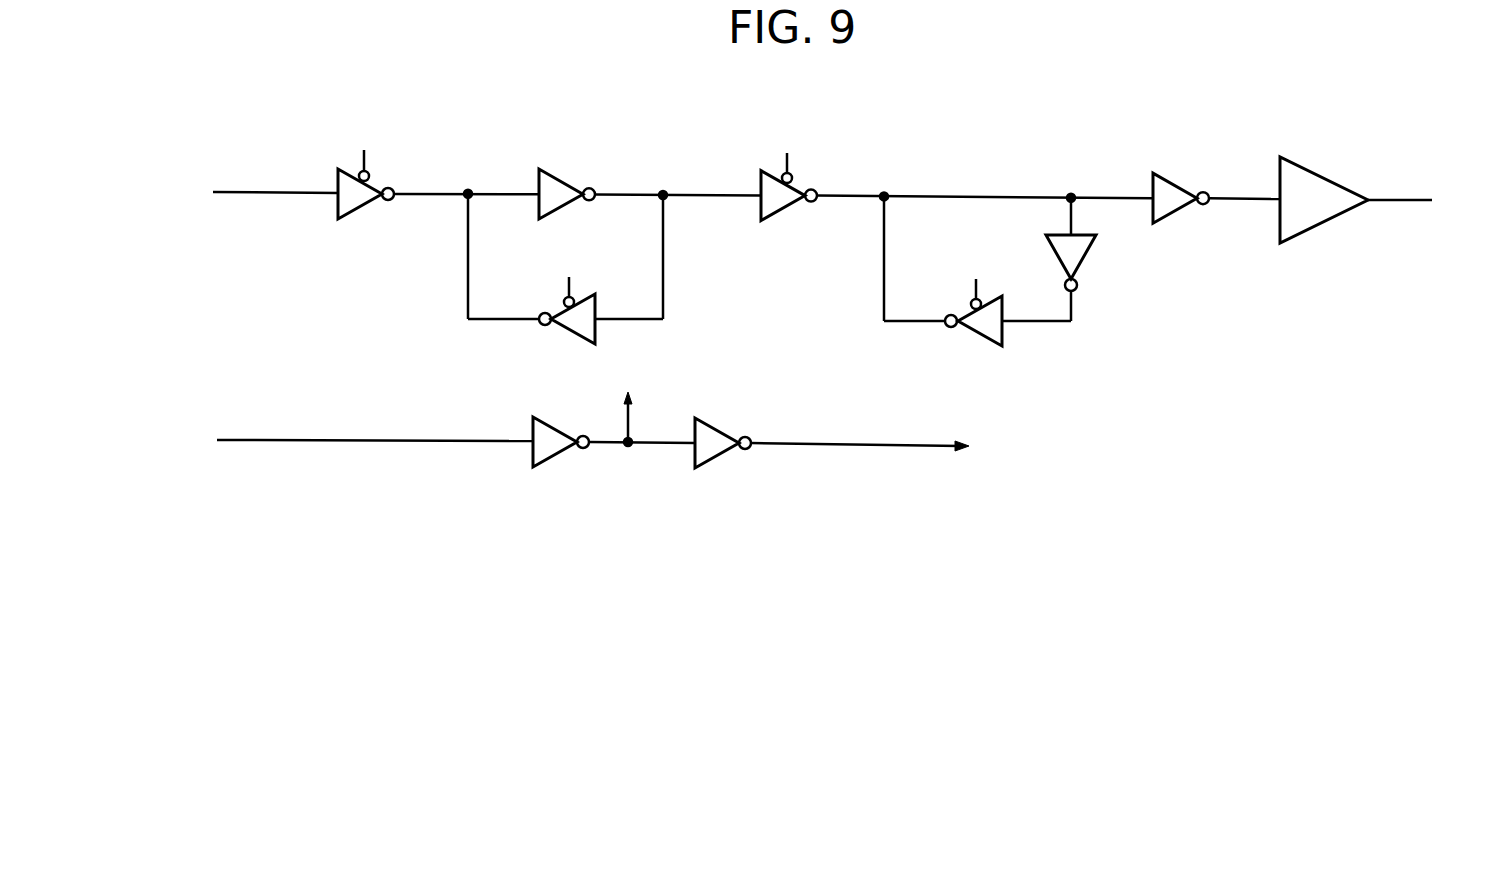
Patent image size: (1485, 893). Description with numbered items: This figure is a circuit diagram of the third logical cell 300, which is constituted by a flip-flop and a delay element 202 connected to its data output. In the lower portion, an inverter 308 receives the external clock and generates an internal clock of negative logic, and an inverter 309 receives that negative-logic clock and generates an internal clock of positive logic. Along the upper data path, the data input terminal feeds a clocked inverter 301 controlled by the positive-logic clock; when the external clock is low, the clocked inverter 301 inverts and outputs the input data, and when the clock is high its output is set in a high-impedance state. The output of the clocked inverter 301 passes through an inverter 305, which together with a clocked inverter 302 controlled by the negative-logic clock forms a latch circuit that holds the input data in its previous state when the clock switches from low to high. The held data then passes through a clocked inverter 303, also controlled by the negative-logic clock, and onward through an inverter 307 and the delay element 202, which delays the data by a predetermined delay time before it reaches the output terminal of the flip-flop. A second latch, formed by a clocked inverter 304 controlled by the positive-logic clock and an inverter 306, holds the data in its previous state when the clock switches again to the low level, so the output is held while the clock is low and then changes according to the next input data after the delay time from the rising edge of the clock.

The third logical cell 300 is at (263, 104).
The clocked inverter 301 is at (363, 206).
The clocked inverter 302 is at (572, 334).
The clocked inverter 303 is at (786, 208).
The clocked inverter 304 is at (978, 337).
The inverter 305 is at (563, 182).
The inverter 306 is at (1089, 257).
The inverter 307 is at (1177, 189).
The inverter 308 is at (556, 455).
The inverter 309 is at (720, 457).
The delay element 202 is at (1329, 224).